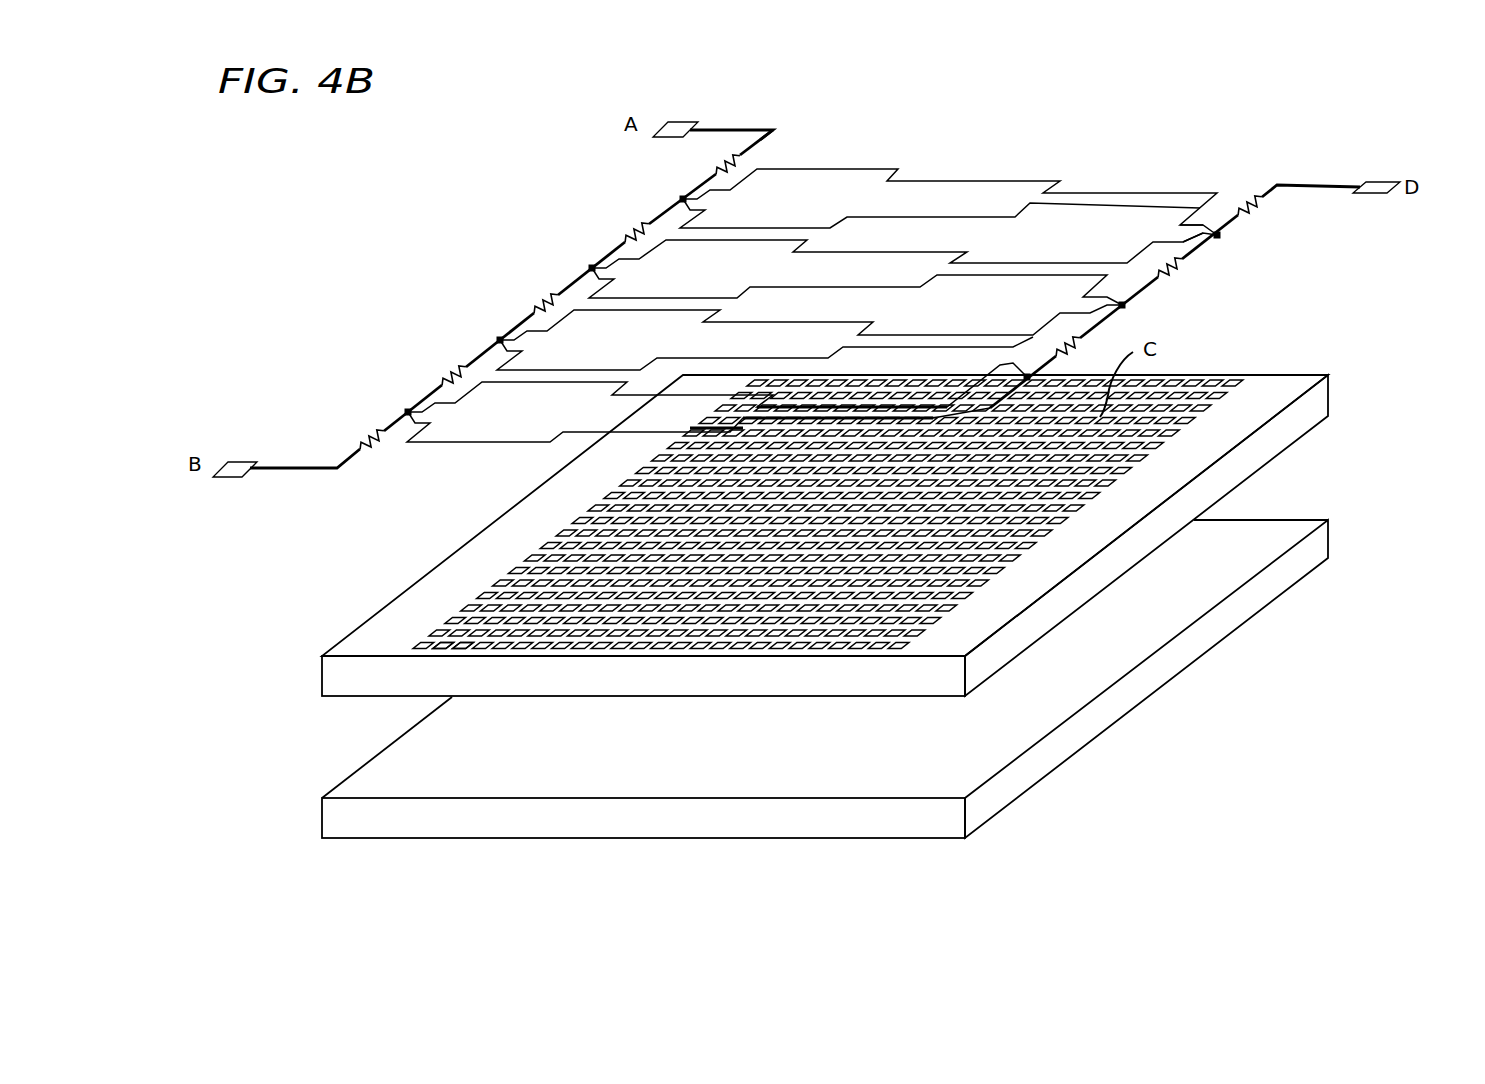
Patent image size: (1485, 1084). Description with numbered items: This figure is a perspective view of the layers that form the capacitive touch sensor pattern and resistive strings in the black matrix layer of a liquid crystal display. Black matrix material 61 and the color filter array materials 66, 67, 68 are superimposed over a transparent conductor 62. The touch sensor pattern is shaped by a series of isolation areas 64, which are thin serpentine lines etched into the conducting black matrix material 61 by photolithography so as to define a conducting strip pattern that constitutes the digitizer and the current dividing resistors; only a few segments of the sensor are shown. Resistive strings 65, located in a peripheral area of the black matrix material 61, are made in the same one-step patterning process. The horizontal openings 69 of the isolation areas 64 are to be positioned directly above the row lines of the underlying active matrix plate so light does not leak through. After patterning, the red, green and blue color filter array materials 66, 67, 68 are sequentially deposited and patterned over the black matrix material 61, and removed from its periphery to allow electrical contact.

The black matrix material 61 is at (818, 188).
The transparent conductor 62 is at (1030, 775).
The isolation areas 64 is at (1193, 193).
The resistive strings 65 is at (1163, 281).
The color filter array material 66 is at (395, 656).
The color filter array material 67 is at (435, 650).
The color filter array material 68 is at (460, 648).
The horizontal openings 69 is at (907, 172).